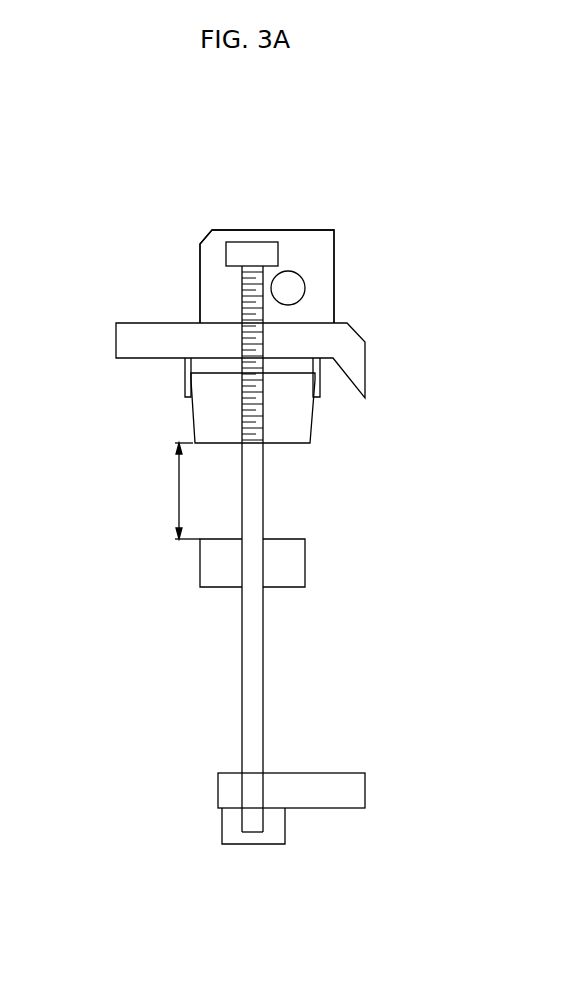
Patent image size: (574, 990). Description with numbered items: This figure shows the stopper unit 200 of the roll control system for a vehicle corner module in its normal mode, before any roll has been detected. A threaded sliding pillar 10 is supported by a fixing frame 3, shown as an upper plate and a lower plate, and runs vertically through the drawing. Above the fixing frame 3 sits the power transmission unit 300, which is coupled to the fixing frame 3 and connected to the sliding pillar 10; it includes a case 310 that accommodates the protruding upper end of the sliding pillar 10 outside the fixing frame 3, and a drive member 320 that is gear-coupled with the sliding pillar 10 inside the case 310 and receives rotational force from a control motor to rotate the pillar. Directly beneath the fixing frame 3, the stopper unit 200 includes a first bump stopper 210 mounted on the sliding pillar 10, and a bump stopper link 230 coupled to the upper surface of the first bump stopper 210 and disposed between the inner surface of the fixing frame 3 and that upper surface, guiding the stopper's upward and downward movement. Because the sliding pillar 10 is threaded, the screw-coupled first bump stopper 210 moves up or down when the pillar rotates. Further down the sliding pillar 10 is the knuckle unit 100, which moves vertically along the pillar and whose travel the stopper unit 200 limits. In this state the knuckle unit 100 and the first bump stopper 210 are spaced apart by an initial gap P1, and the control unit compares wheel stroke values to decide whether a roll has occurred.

The fixing frame 3 is at (133, 323).
The sliding pillar 10 is at (252, 268).
The knuckle unit 100 is at (295, 563).
The stopper unit 200 is at (257, 410).
The first bump stopper 210 is at (195, 414).
The bump stopper link 230 is at (187, 363).
The power transmission unit 300 is at (187, 270).
The case 310 is at (325, 253).
The drive member 320 is at (292, 289).
The initial gap P1 is at (173, 491).